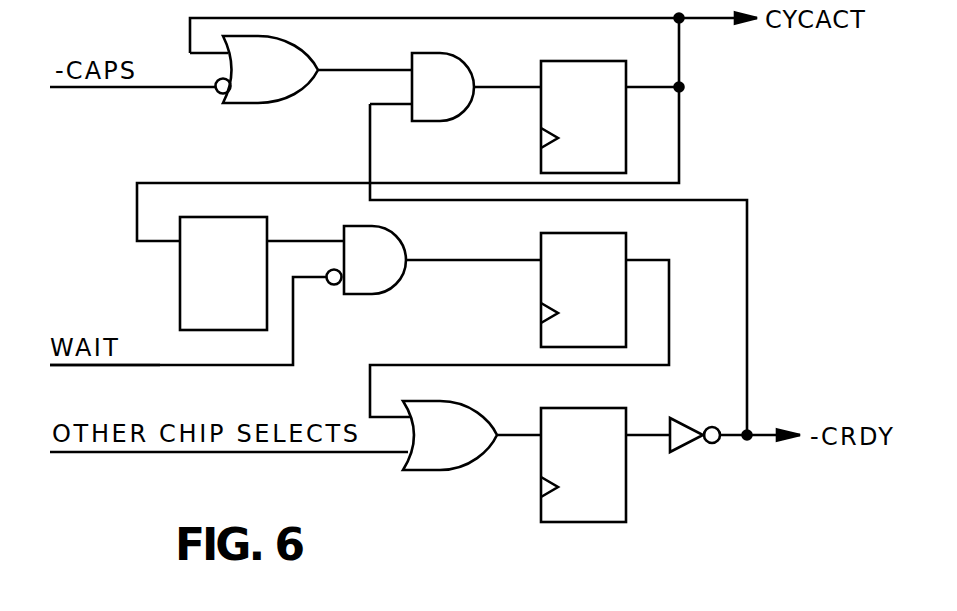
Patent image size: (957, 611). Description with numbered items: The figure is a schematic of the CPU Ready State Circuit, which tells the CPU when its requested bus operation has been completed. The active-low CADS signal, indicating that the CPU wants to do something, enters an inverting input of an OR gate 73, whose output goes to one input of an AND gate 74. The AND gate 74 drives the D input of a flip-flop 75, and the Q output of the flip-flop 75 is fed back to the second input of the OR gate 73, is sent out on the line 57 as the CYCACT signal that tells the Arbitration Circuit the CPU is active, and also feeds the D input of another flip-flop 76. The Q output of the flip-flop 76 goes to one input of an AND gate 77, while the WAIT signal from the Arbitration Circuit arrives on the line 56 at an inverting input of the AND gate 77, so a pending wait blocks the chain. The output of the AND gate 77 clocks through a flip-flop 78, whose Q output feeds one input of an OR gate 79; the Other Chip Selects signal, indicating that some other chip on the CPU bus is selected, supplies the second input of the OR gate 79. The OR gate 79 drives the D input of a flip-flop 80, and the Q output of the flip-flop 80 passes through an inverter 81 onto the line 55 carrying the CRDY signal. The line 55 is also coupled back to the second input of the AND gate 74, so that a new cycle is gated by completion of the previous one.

The OR gate 73 is at (267, 101).
The AND gate 74 is at (458, 63).
The flip-flop 75 is at (540, 119).
The line 57 is at (708, 19).
The flip-flop 76 is at (190, 285).
The WAIT signal line 56 is at (163, 367).
The AND gate 77 is at (380, 288).
The flip-flop 78 is at (545, 288).
The OR gate 79 is at (440, 469).
The flip-flop 80 is at (540, 498).
The inverter 81 is at (682, 439).
The line 55 is at (767, 438).